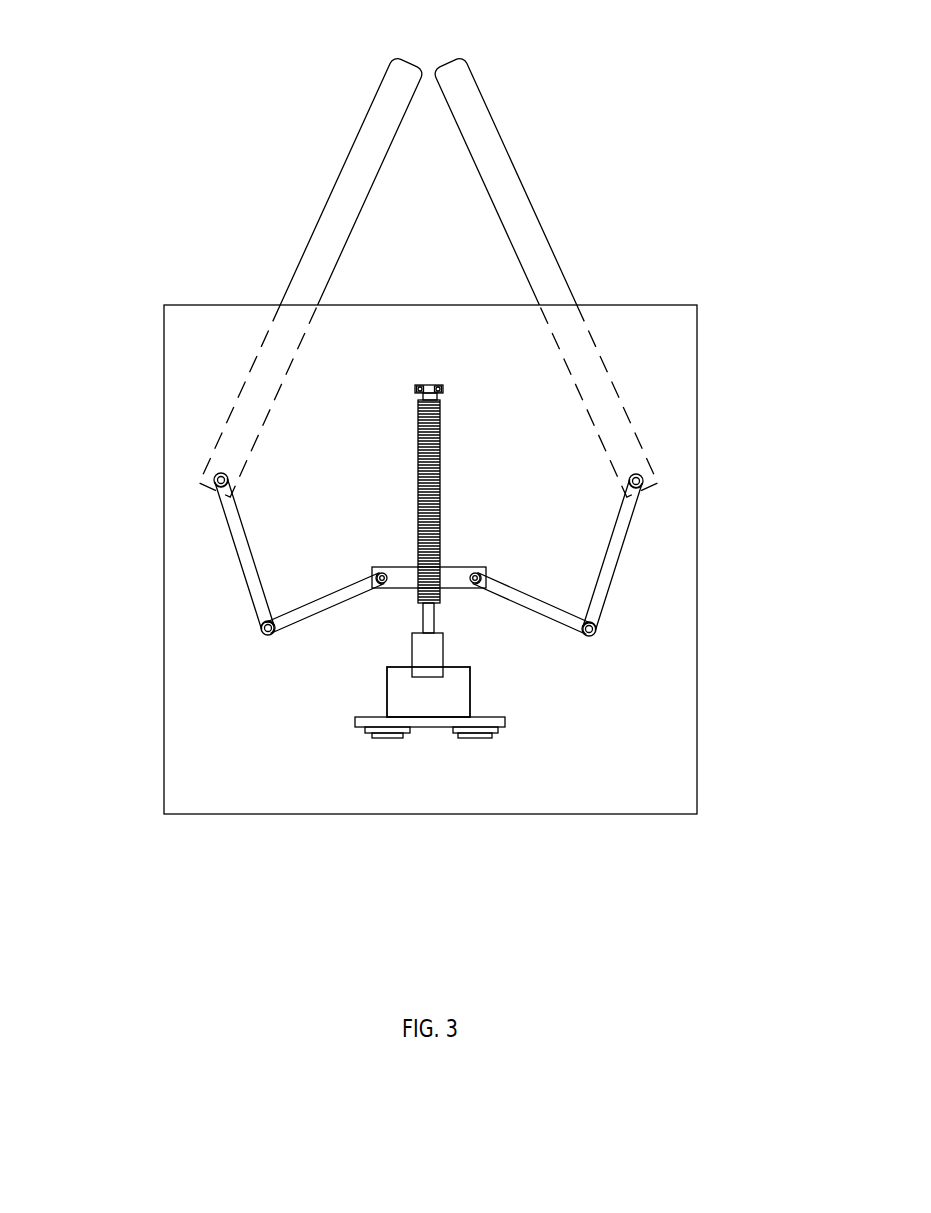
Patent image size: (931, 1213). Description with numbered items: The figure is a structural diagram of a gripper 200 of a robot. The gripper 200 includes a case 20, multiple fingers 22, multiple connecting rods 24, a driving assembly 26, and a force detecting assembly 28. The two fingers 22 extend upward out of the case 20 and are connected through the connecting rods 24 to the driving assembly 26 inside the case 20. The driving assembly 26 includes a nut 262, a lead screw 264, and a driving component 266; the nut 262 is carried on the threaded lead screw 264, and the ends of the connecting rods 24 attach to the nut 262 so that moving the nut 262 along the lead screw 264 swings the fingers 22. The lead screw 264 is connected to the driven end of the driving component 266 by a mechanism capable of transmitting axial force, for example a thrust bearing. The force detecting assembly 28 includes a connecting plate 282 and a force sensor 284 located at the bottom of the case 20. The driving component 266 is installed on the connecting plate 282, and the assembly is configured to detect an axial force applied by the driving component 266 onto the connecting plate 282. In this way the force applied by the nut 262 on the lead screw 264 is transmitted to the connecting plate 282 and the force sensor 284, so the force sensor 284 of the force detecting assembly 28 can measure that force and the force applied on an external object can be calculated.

The gripper 200 is at (103, 107).
The case 20 is at (205, 759).
The fingers 22 is at (526, 216).
The connecting rods 24 is at (302, 607).
The driving assembly 26 is at (593, 551).
The nut 262 is at (485, 571).
The lead screw 264 is at (440, 460).
The driving component 266 is at (456, 692).
The force detecting assembly 28 is at (355, 825).
The connecting plate 282 is at (355, 718).
The force sensor 284 is at (392, 740).